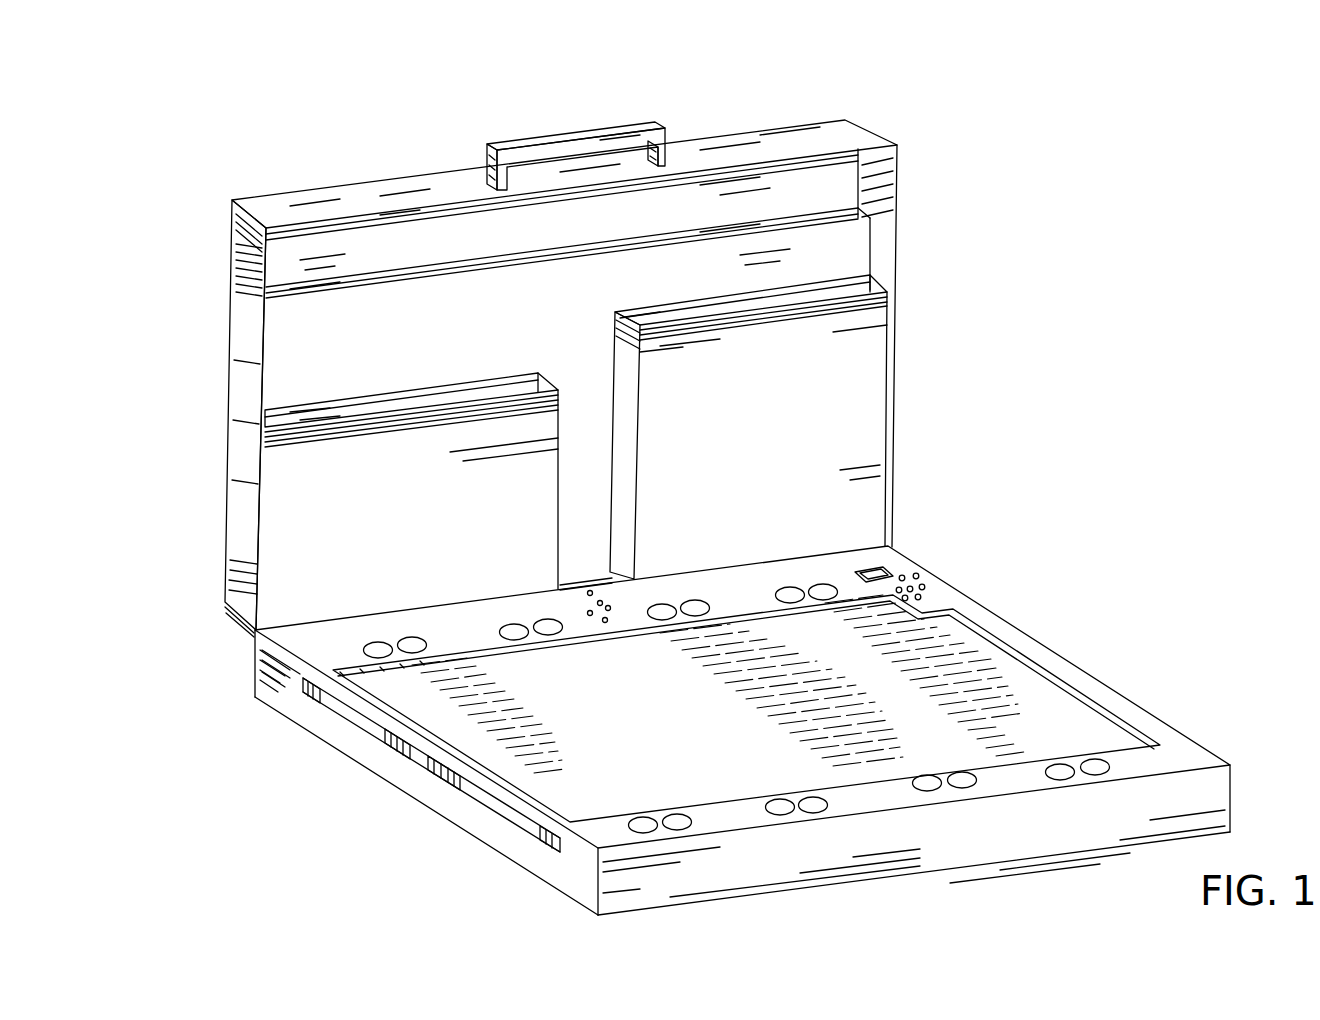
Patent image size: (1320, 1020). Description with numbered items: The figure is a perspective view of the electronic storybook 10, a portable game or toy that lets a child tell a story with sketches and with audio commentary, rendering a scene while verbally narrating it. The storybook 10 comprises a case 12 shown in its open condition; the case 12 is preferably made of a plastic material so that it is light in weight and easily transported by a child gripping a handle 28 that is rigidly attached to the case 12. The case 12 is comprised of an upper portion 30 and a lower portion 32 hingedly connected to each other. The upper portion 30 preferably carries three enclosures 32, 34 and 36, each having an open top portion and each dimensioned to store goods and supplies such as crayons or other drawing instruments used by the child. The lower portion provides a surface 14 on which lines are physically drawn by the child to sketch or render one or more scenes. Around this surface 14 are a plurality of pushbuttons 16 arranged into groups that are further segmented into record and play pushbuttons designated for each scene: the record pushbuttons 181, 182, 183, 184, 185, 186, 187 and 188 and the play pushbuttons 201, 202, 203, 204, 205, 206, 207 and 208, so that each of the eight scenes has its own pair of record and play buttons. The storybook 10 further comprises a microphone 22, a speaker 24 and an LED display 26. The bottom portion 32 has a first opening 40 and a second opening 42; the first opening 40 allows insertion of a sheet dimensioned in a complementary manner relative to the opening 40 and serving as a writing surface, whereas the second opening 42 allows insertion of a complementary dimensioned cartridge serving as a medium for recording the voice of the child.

The electronic storybook 10 is at (932, 106).
The case 12 is at (898, 183).
The surface 14 is at (963, 647).
The pushbuttons 16 is at (426, 586).
The record pushbutton 181 is at (370, 643).
The record pushbutton 182 is at (514, 624).
The record pushbutton 183 is at (662, 604).
The record pushbutton 184 is at (790, 587).
The record pushbutton 185 is at (641, 817).
The record pushbutton 186 is at (779, 799).
The record pushbutton 187 is at (925, 775).
The record pushbutton 188 is at (1058, 764).
The play pushbutton 201 is at (412, 638).
The play pushbutton 202 is at (548, 619).
The play pushbutton 203 is at (695, 600).
The play pushbutton 204 is at (823, 584).
The play pushbutton 205 is at (676, 814).
The play pushbutton 206 is at (812, 797).
The play pushbutton 207 is at (961, 772).
The play pushbutton 208 is at (1093, 759).
The microphone 22 is at (608, 605).
The speaker 24 is at (910, 576).
The LED display 26 is at (560, 571).
The handle 28 is at (570, 135).
The upper portion 30 is at (224, 590).
The lower portion 32 is at (585, 244).
The enclosure 34 is at (497, 375).
The enclosure 36 is at (742, 297).
The first opening 40 is at (405, 747).
The second opening 42 is at (870, 565).